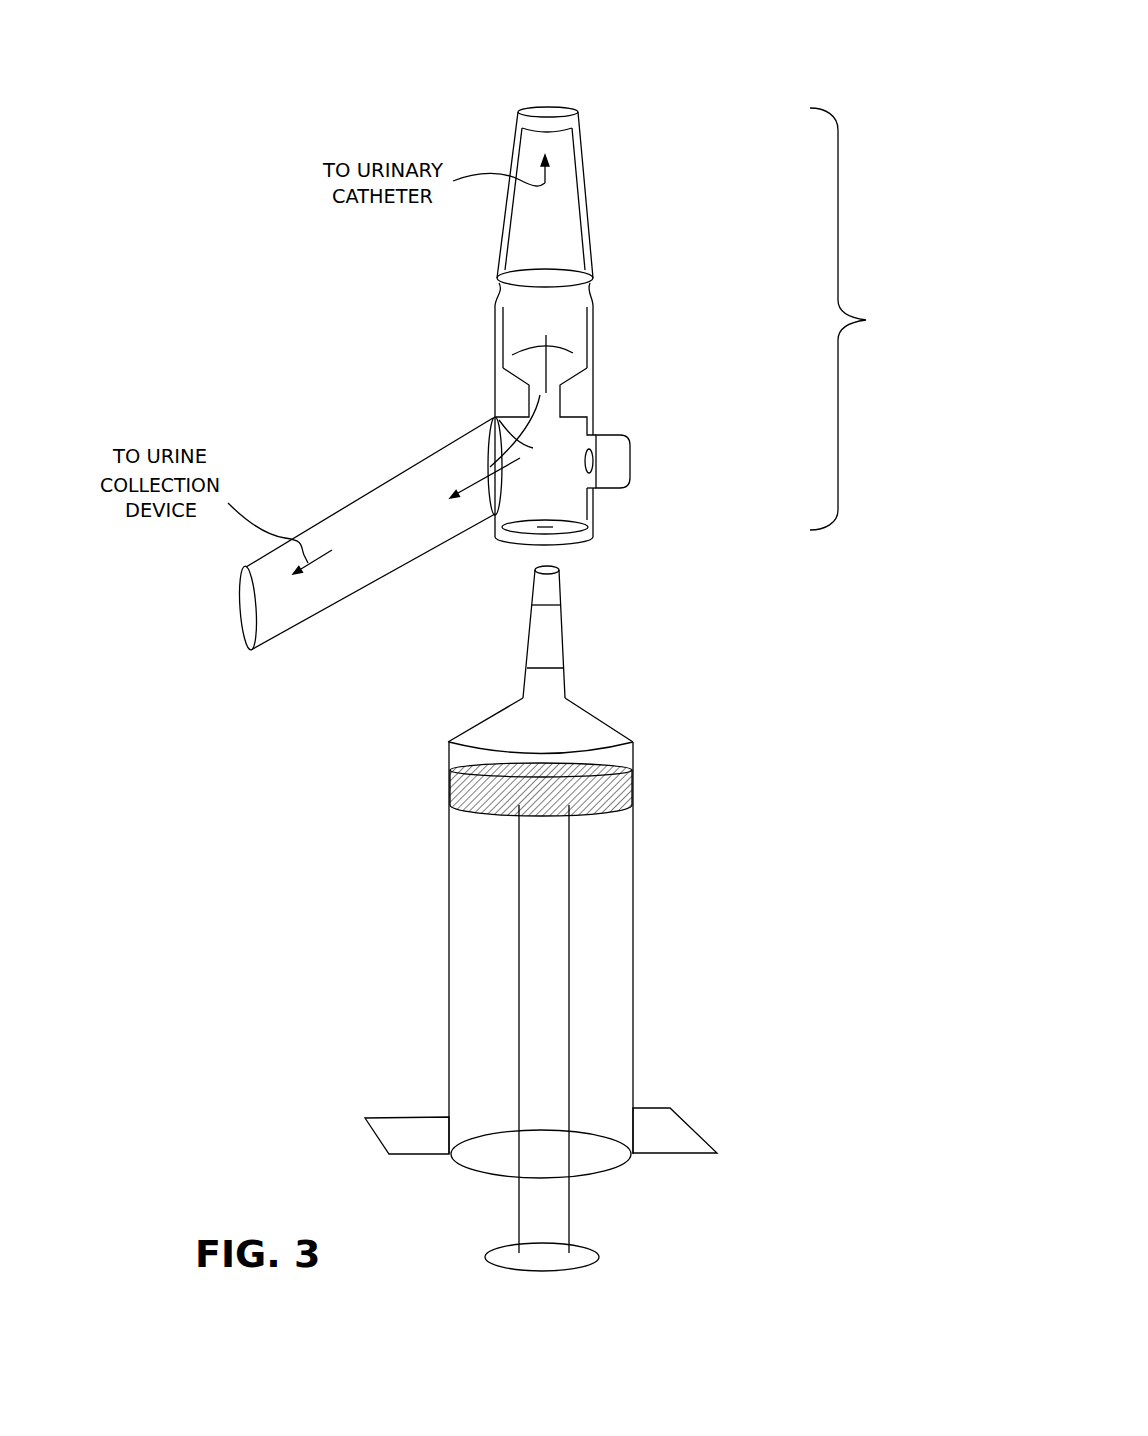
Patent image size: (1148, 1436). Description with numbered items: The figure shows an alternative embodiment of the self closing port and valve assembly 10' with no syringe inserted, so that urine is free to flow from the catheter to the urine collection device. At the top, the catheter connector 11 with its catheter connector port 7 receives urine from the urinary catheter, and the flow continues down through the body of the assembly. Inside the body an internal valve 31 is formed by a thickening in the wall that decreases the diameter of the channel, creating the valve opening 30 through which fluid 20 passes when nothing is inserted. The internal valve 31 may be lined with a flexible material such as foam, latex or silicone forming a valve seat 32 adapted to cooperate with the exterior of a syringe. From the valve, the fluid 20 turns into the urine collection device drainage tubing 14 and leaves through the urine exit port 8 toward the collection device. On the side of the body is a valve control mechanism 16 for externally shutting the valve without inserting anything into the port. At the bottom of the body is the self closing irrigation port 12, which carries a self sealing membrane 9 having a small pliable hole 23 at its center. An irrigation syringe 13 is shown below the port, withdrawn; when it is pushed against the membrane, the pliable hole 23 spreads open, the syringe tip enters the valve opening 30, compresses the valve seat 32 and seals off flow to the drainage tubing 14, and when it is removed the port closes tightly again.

The catheter connector port 7 is at (553, 108).
The catheter connector 11 is at (562, 220).
The valve opening 30 is at (540, 395).
The valve seat 32 is at (560, 392).
The internal valve 31 is at (580, 403).
The fluid 20 is at (495, 412).
The urine collection device drainage tubing 14 is at (387, 497).
The valve control mechanism 16 is at (617, 478).
The port and valve assembly 10' is at (858, 319).
The self sealing membrane 9 is at (518, 533).
The pliable hole 23 is at (547, 531).
The self closing irrigation port 12 is at (596, 538).
The urine exit port 8 is at (255, 603).
The irrigation syringe 13 is at (603, 859).